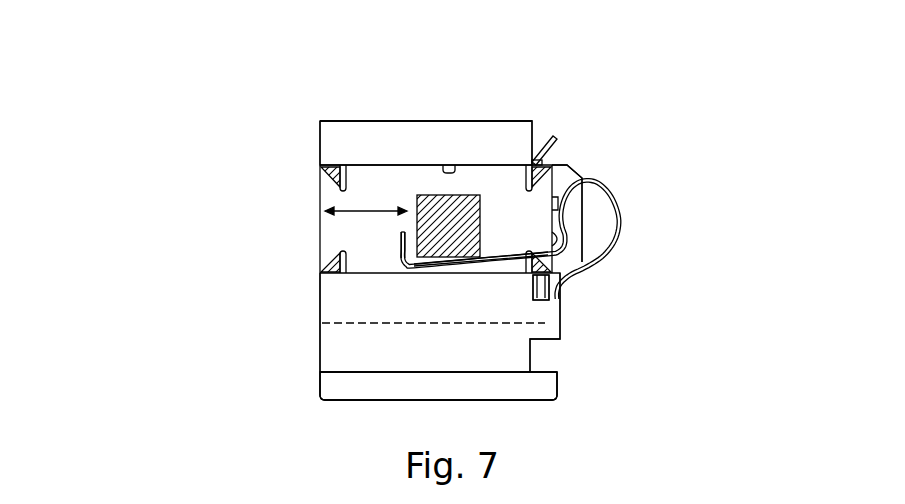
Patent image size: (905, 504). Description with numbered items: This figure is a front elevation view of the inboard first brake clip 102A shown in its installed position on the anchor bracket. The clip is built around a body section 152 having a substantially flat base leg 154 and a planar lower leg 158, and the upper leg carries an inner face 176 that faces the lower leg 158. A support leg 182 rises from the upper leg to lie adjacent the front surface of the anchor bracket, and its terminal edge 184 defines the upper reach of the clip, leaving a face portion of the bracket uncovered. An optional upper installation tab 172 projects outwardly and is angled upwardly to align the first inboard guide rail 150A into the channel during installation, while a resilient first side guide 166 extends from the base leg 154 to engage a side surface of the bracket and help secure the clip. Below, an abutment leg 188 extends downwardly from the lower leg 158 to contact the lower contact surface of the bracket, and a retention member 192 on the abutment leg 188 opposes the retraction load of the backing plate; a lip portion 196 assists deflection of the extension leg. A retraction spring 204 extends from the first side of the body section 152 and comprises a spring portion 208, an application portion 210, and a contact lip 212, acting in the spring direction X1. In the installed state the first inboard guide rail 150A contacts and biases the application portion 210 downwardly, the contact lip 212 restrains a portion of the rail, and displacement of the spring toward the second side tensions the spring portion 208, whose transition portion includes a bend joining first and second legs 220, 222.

The inboard first brake clip 102A is at (594, 52).
The support leg 182 is at (360, 127).
The terminal edge 184 is at (420, 120).
The inner face 176 is at (449, 166).
The first inboard guide rail 150A is at (463, 195).
The upper installation tab 172 is at (560, 148).
The first side guide 166 is at (578, 170).
The spring portion 208 is at (615, 193).
The retraction spring 204 is at (634, 227).
The base leg 154 is at (330, 196).
The spring direction X1 is at (330, 228).
The contact lip 212 is at (400, 236).
The application portion 210 is at (500, 252).
The lower leg 158 is at (377, 263).
The first leg 220 is at (563, 285).
The second leg 222 is at (560, 293).
The abutment leg 188 is at (337, 325).
The retention member 192 is at (561, 328).
The body section 152 is at (306, 391).
The lip portion 196 is at (552, 387).